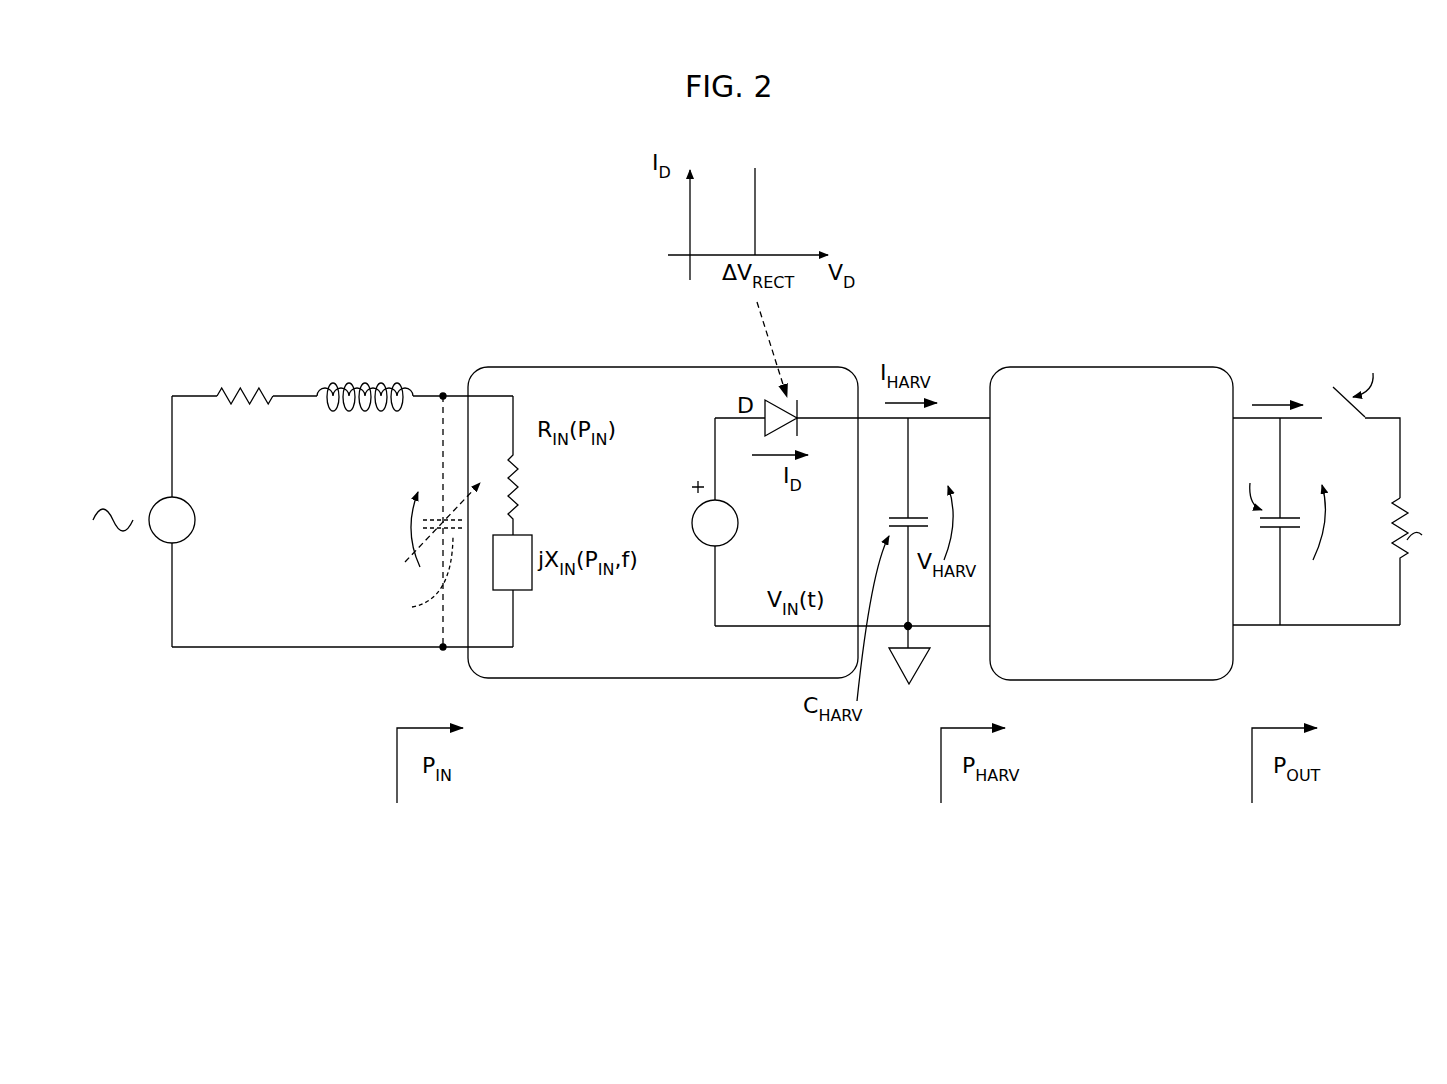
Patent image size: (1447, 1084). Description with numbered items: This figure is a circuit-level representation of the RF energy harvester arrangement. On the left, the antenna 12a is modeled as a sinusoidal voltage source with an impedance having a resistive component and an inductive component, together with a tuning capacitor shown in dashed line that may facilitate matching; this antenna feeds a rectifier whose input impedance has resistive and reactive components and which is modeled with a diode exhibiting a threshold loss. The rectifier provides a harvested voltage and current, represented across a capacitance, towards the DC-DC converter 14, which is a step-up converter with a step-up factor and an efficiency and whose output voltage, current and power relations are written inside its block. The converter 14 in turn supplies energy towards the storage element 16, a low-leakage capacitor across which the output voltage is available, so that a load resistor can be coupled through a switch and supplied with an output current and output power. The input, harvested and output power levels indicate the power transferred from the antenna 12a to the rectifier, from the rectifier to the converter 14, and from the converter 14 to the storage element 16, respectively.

The antenna 12a is at (267, 668).
The DC-DC converter 14 is at (1106, 347).
The storage element 16 is at (1313, 377).